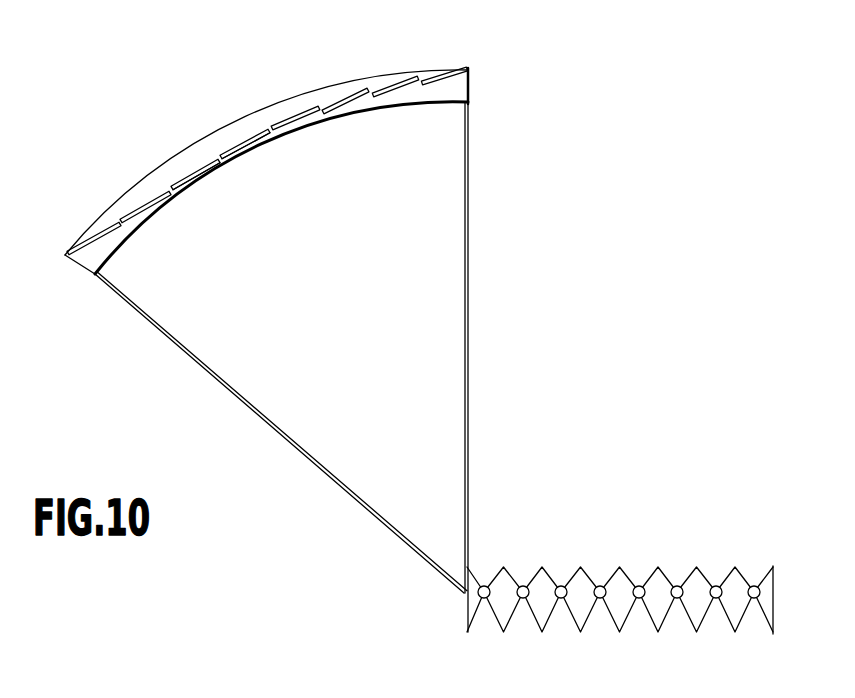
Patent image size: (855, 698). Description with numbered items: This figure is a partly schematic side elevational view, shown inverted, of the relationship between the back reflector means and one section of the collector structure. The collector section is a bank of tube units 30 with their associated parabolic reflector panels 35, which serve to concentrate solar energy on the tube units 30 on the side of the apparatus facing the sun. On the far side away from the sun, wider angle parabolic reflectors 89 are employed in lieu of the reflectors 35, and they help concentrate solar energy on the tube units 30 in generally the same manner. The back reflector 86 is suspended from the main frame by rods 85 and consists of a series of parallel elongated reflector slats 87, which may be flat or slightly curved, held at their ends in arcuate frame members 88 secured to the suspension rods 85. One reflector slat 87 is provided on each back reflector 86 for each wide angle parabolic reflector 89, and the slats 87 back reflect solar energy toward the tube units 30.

The tube units 30 is at (715, 585).
The parabolic reflector panels 35 is at (688, 613).
The rods 85 is at (333, 483).
The back reflectors 86 is at (328, 100).
The reflector slats 87 is at (282, 120).
The arcuate frame members 88 is at (403, 70).
The wide angle parabolic reflector 89 is at (583, 575).